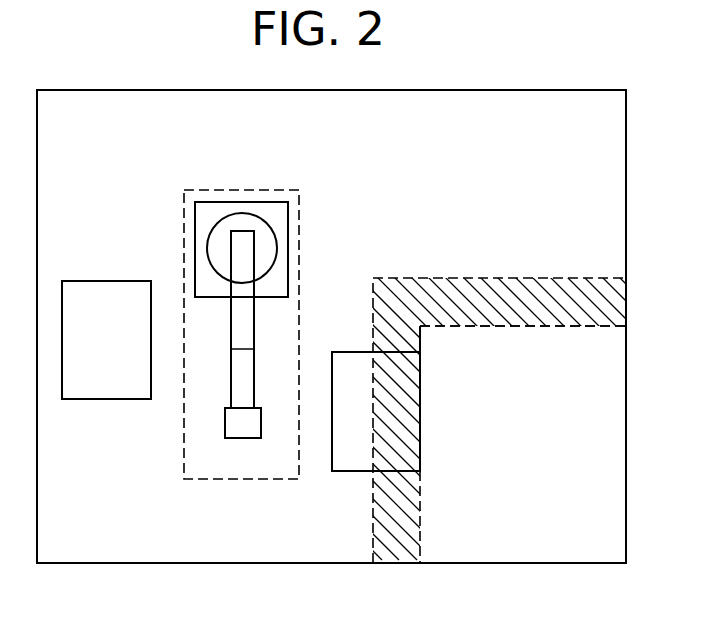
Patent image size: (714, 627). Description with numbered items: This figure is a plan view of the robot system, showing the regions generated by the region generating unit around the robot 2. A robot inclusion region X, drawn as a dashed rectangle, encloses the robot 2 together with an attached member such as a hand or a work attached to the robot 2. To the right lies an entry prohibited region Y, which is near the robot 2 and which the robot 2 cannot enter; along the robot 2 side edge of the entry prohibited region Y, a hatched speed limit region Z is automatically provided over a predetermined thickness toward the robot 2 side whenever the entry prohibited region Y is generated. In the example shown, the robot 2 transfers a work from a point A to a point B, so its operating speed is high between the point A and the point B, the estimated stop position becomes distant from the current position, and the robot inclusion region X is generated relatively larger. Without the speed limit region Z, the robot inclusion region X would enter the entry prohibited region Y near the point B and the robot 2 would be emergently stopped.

The robot 2 is at (293, 249).
The point A is at (106, 340).
The point B is at (376, 411).
The robot inclusion region X is at (184, 215).
The entry prohibited region Y is at (480, 326).
The speed limit region Z is at (552, 278).